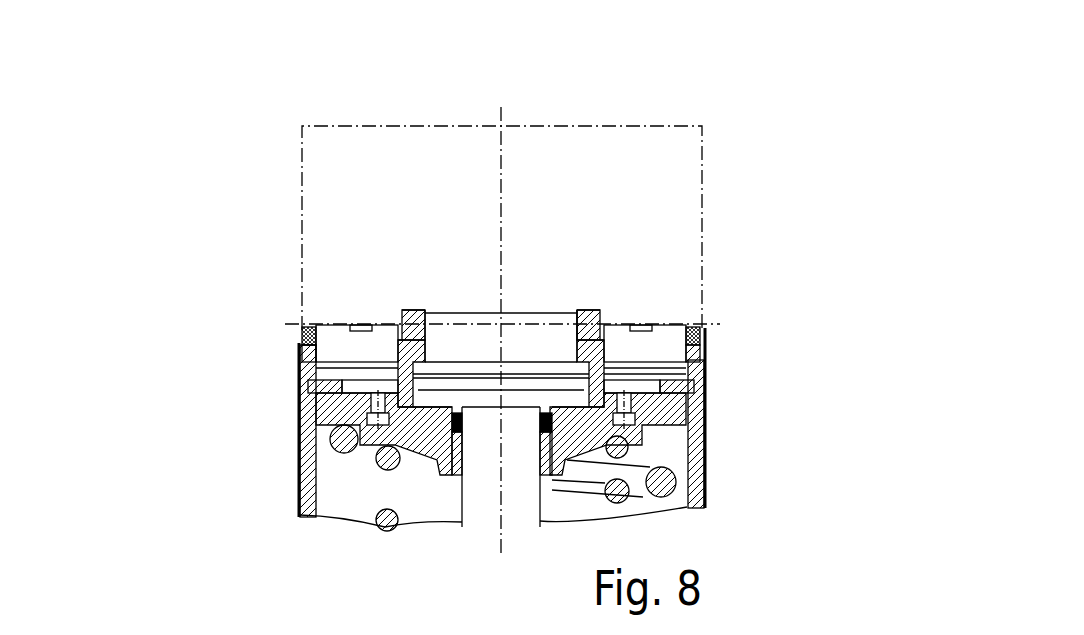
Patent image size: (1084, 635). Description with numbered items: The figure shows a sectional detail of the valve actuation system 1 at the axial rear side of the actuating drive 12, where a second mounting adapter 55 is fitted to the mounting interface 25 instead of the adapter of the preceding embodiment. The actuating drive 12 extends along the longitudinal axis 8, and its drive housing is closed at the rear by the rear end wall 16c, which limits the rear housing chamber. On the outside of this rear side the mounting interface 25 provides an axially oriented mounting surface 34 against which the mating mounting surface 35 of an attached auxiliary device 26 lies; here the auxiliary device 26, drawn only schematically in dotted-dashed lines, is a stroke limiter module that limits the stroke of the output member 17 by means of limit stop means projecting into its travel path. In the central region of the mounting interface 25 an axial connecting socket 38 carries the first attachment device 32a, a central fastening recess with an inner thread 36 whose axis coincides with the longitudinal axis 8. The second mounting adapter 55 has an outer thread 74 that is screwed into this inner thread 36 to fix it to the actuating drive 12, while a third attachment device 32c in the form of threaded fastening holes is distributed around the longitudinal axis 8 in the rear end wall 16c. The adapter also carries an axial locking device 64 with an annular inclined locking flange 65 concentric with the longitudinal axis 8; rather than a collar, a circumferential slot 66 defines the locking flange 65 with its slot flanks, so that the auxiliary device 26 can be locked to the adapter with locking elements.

The valve actuation system 1 is at (728, 133).
The longitudinal axis 8 is at (501, 179).
The actuating drive 12 is at (303, 488).
The rear end wall 16c is at (690, 404).
The output member 17 is at (482, 510).
The mounting interface 25 is at (335, 320).
The auxiliary device 26 is at (680, 184).
The first attachment device 32a is at (588, 355).
The third attachment device 32c is at (364, 409).
The mounting surface 34 is at (311, 325).
The mating mounting surface 35 is at (333, 337).
The inner thread 36 is at (423, 356).
The connecting socket 38 is at (688, 364).
The mounting adapter 55 is at (417, 306).
The axial locking device 64 is at (408, 306).
The locking flange 65 is at (604, 313).
The circumferential slot 66 is at (398, 312).
The outer thread 74 is at (412, 370).